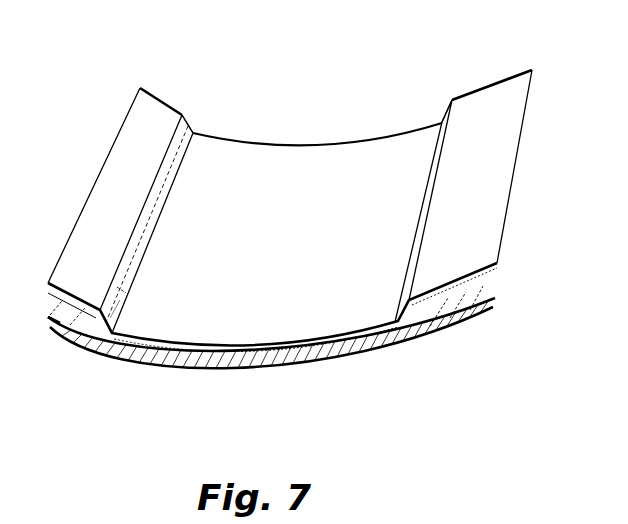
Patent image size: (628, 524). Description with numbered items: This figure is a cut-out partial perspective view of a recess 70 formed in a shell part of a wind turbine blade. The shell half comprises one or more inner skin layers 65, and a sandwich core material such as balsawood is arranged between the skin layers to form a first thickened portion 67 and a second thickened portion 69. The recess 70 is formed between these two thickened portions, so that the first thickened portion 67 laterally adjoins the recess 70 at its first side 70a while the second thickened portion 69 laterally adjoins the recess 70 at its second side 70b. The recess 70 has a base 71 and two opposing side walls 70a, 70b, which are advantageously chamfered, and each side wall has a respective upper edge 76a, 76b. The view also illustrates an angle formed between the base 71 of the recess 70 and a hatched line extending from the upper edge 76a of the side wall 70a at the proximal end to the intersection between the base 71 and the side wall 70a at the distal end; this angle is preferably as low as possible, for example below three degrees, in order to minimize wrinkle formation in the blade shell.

The recess 70 is at (307, 224).
The first side of the recess 70a is at (193, 130).
The second side of the recess 70b is at (442, 123).
The base 71 is at (290, 242).
The upper edge 76a is at (138, 178).
The upper edge 76b is at (497, 187).
The inner skin layer 65 is at (498, 272).
The second thickened portion 69 is at (472, 297).
The first thickened portion 67 is at (65, 316).